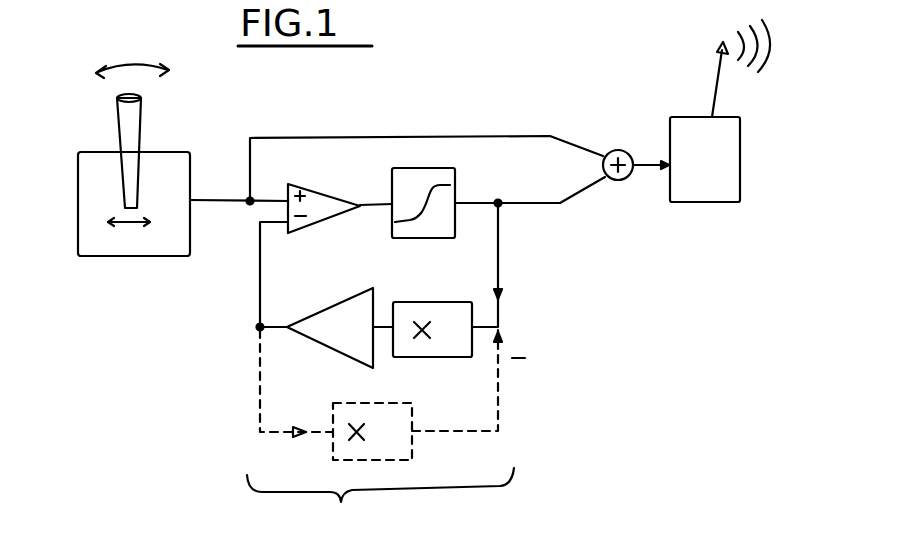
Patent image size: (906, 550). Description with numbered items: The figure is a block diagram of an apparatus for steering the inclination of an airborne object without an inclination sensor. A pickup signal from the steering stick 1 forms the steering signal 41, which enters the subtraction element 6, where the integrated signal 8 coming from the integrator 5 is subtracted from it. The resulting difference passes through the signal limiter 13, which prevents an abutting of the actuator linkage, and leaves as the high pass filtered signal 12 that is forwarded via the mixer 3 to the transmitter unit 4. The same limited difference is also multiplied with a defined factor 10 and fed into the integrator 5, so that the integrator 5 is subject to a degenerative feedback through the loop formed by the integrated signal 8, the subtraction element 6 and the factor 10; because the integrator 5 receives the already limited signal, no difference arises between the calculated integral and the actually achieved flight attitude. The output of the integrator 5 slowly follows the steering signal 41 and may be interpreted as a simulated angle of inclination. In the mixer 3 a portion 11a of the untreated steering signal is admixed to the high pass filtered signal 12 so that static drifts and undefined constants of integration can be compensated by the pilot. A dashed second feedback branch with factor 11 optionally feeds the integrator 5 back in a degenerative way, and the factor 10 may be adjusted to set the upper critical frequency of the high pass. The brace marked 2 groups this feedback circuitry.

The steering stick 1 is at (134, 160).
The control circuit 2 is at (380, 505).
The mixer 3 is at (636, 185).
The transmitter unit 4 is at (720, 111).
The integrator 5 is at (326, 332).
The subtraction element 6 is at (340, 201).
The integrated signal 8 is at (273, 276).
The factor 10 is at (447, 280).
The factor 11 is at (392, 395).
The portion of the un-treated steering signal 11a is at (426, 154).
The high pass filtered signal 12 is at (530, 191).
The signal limiter 13 is at (437, 201).
The steering signal 41 is at (239, 188).